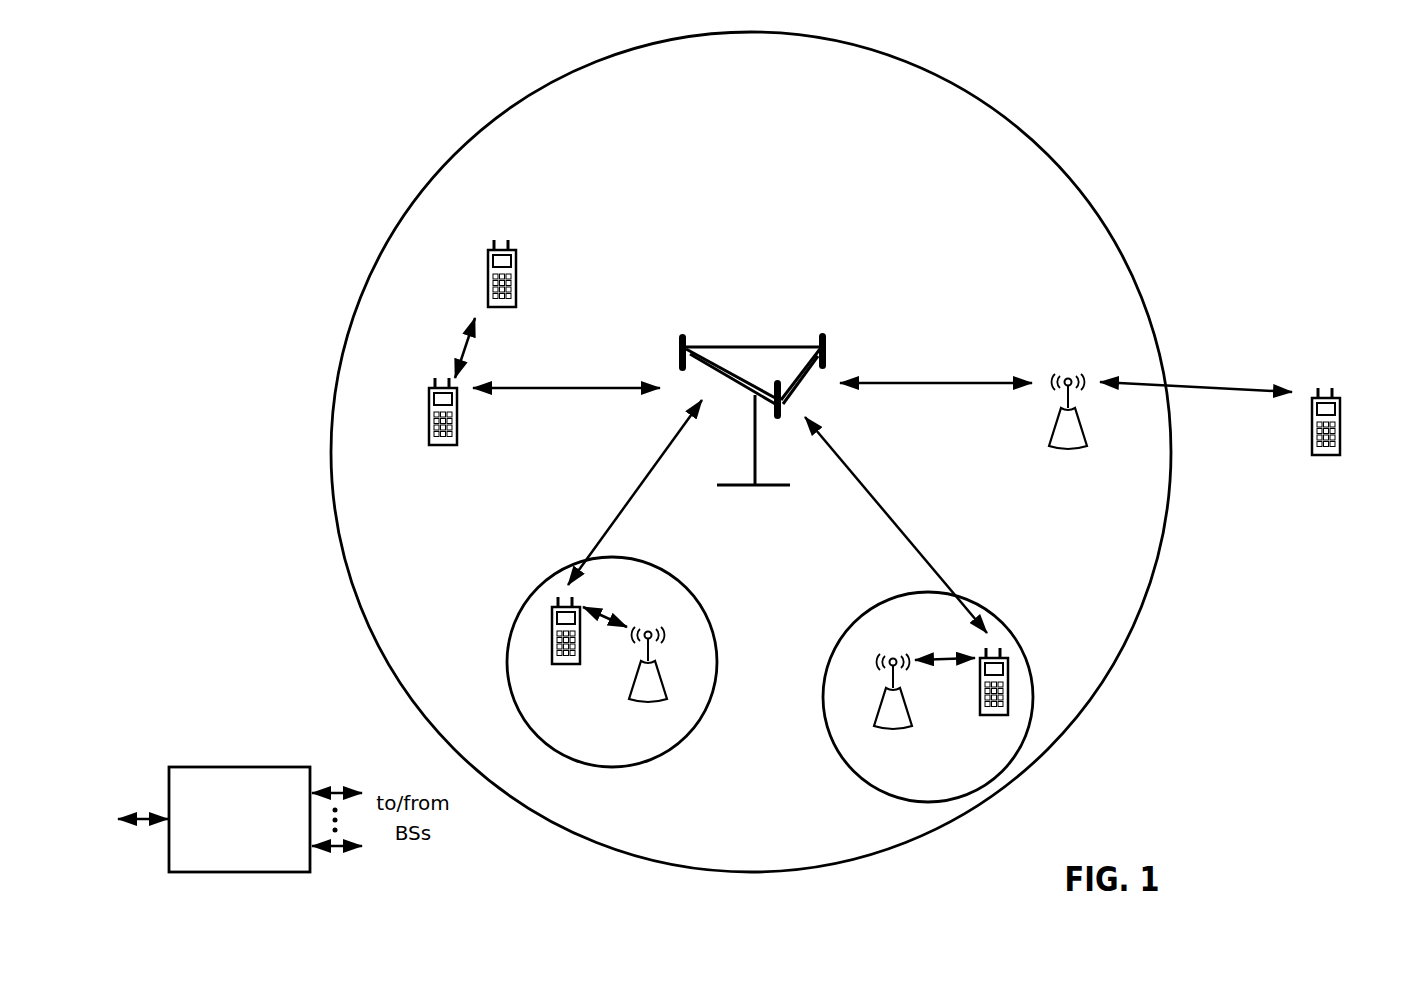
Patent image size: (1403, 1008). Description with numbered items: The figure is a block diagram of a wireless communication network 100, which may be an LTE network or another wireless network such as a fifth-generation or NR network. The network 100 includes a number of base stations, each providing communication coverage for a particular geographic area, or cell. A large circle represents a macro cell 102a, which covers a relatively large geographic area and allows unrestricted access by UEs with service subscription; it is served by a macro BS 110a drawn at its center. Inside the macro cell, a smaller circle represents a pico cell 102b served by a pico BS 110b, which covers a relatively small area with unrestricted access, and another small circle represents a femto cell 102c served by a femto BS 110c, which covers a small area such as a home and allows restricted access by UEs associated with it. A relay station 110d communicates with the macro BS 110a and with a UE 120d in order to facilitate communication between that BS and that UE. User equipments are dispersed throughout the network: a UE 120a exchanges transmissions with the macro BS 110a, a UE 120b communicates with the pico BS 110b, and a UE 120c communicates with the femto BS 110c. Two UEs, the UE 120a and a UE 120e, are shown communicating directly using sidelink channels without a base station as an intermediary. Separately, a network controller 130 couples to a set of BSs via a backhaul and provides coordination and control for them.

The wireless communication network 100 is at (1230, 114).
The macro cell 102a is at (1030, 137).
The pico cell 102b is at (690, 592).
The femto cell 102c is at (847, 623).
The macro BS 110a is at (749, 346).
The pico BS 110b is at (666, 691).
The femto BS 110c is at (878, 716).
The relay station 110d is at (1068, 378).
The UE 120a is at (430, 402).
The UE 120b is at (553, 656).
The UE 120c is at (981, 712).
The UE 120d is at (1341, 410).
The UE 120e is at (488, 263).
The network controller 130 is at (236, 767).